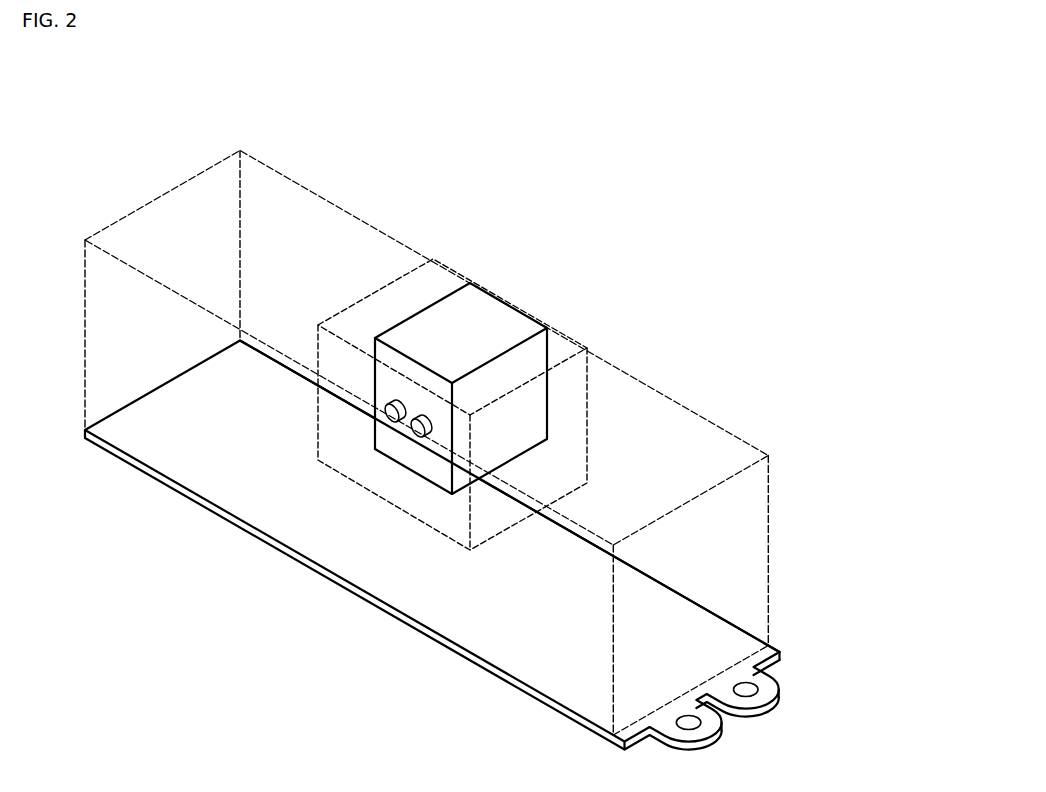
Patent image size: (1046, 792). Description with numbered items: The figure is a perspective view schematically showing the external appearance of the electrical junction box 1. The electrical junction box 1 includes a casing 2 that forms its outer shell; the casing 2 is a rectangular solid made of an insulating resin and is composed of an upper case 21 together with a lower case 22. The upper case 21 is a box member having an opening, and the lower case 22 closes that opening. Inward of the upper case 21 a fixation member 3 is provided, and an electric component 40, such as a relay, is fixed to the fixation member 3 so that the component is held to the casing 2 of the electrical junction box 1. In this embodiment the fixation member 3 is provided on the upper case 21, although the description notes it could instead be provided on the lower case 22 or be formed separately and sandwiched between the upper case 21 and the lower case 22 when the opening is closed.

The electrical junction box 1 is at (493, 441).
The casing 2 is at (493, 462).
The upper case 21 is at (858, 695).
The lower case 22 is at (773, 681).
The fixation member 3 is at (568, 398).
The electric component 40 is at (492, 312).